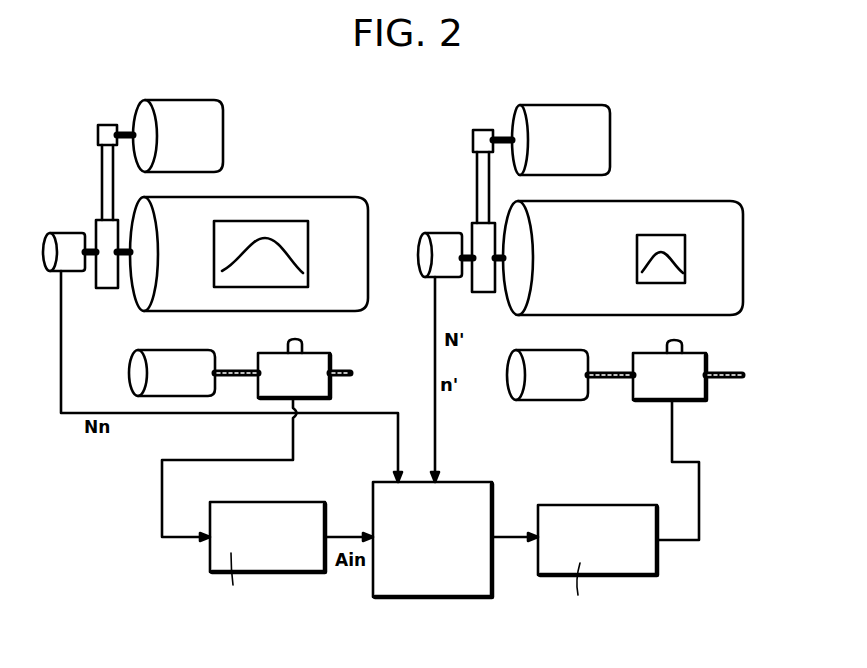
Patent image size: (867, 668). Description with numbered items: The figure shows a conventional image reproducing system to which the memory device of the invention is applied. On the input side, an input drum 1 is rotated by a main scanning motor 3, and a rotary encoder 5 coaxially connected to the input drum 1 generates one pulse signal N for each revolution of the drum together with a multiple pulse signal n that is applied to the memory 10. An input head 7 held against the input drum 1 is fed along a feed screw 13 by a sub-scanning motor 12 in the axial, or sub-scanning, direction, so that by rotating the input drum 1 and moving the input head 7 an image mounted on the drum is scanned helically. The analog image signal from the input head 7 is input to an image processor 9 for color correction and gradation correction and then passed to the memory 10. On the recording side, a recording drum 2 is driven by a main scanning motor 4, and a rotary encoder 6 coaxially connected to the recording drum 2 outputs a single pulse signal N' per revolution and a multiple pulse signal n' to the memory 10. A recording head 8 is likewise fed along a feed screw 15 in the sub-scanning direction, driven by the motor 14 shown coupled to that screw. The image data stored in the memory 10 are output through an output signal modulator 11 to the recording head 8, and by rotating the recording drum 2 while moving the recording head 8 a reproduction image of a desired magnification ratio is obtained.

The input drum 1 is at (331, 218).
The recording drum 2 is at (697, 215).
The main scanning motor 3 is at (216, 135).
The main scanning motor 4 is at (592, 150).
The rotary encoder 5 is at (70, 243).
The rotary encoder 6 is at (440, 247).
The input head 7 is at (323, 367).
The recording head 8 is at (697, 366).
The image processor 9 is at (296, 511).
The memory 10 is at (482, 495).
The output signal modulator 11 is at (605, 511).
The sub-scanning motor 12 is at (198, 362).
The feed screw 13 is at (350, 370).
The head feed motor 14 is at (570, 366).
The feed screw 15 is at (743, 372).